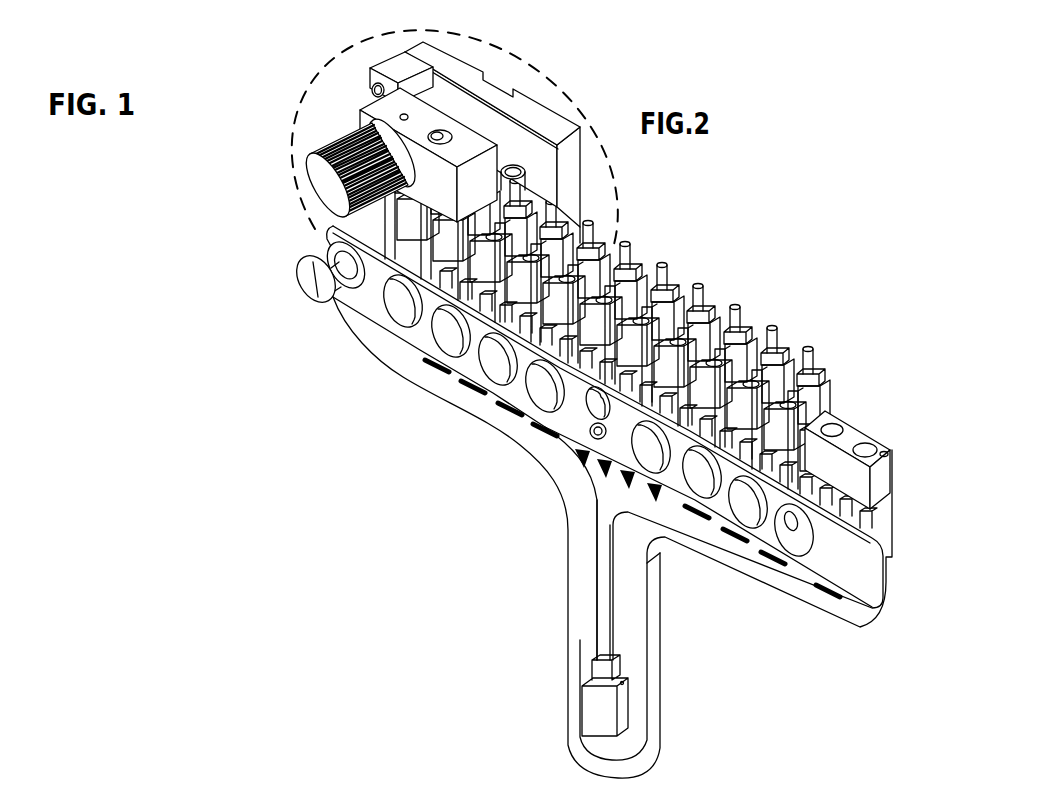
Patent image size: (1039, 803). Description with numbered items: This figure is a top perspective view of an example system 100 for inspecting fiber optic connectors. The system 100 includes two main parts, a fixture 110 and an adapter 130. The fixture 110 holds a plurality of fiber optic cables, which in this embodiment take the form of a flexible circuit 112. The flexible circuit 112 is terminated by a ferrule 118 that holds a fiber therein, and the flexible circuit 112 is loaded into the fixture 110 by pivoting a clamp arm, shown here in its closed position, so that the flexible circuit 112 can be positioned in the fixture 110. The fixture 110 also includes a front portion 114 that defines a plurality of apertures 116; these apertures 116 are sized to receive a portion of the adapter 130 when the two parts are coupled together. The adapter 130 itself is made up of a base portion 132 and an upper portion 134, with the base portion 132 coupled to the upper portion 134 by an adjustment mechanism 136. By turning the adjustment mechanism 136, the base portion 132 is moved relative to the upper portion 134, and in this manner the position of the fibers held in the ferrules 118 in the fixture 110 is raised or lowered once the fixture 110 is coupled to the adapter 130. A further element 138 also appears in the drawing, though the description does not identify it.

The system 100 is at (790, 148).
The fixture 110 is at (654, 650).
The flexible circuit 112 is at (607, 578).
The front portion 114 is at (889, 481).
The apertures 116 is at (837, 427).
The ferrule 118 is at (438, 136).
The adapter 130 is at (463, 55).
The base portion 132 is at (548, 125).
The upper portion 134 is at (390, 70).
The adjustment mechanism 136 is at (320, 187).
The probe carrier 138 is at (460, 203).